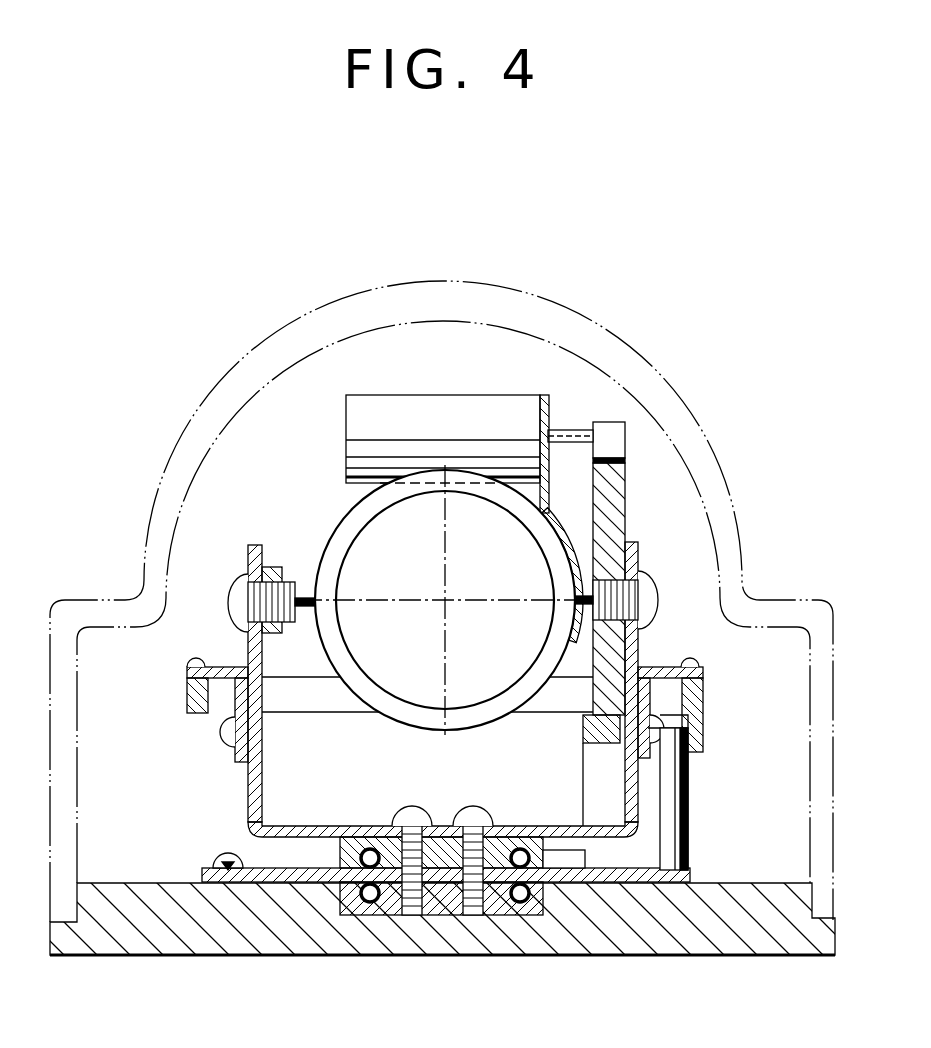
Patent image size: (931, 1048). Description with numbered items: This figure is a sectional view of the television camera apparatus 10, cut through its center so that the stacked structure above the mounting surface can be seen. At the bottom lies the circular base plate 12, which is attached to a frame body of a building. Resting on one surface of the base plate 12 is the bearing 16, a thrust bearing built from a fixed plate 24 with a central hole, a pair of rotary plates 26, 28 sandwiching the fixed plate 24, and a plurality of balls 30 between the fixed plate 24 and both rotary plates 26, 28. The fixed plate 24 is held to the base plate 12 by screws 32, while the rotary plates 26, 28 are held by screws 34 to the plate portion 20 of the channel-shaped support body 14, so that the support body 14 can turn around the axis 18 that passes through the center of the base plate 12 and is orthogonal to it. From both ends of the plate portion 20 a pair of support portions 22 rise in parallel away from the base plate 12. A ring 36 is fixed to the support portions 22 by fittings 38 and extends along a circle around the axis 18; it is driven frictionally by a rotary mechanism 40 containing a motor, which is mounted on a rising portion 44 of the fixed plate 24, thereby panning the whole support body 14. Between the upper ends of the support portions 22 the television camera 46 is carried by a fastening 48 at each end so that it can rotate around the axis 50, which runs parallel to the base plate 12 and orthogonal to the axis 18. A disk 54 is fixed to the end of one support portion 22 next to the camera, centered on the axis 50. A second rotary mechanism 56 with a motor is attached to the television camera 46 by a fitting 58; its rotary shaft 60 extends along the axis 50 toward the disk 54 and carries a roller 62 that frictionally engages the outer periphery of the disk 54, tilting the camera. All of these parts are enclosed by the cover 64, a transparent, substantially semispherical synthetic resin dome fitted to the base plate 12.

The television camera apparatus 10 is at (629, 332).
The circular base plate 12 is at (680, 925).
The support body 14 is at (445, 691).
The bearing 16 is at (352, 920).
The axis 18 is at (448, 520).
The plate portion 20 is at (320, 827).
The support portions 22 is at (253, 775).
The fixed plate 24 is at (268, 882).
The rotary plate 26 is at (530, 915).
The rotary plate 28 is at (557, 862).
The balls 30 is at (518, 850).
The screws 32 is at (222, 862).
The screws 34 is at (480, 814).
The ring 36 is at (704, 690).
The fittings 38 is at (236, 667).
The rotary mechanism 40 is at (668, 842).
The rising portion 44 is at (680, 728).
The television camera 46 is at (346, 540).
The fastening 48 is at (236, 592).
The axis 50 is at (460, 604).
The disk 54 is at (612, 490).
The rotary mechanism 56 is at (420, 405).
The fitting 58 is at (540, 410).
The rotary shaft 60 is at (572, 430).
The roller 62 is at (617, 425).
The cover 64 is at (262, 358).